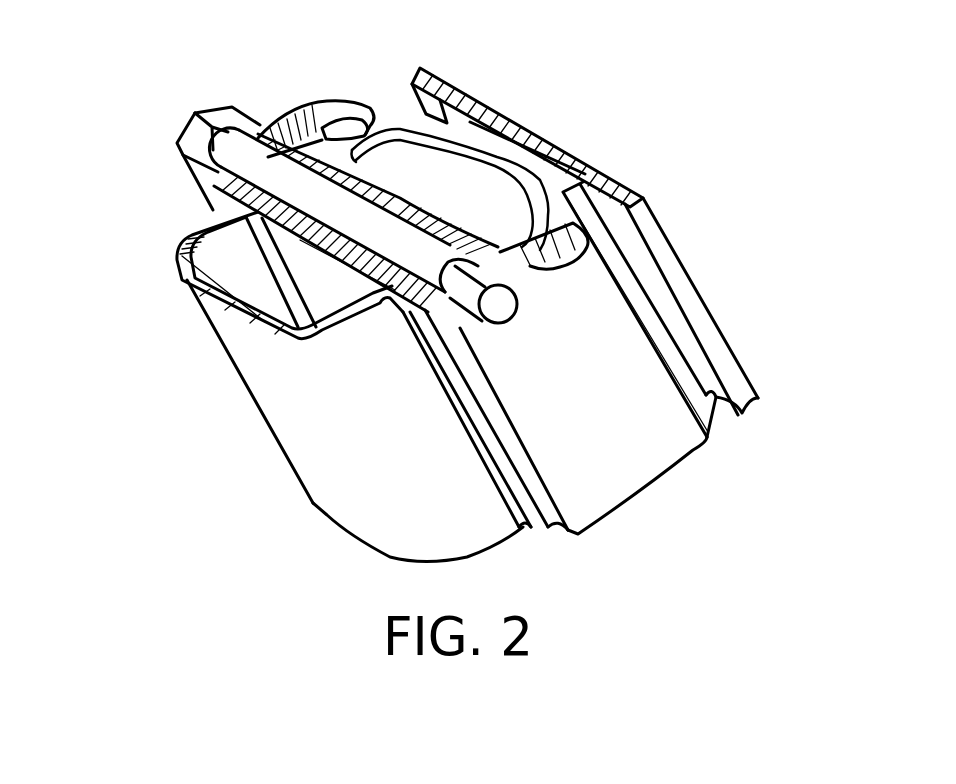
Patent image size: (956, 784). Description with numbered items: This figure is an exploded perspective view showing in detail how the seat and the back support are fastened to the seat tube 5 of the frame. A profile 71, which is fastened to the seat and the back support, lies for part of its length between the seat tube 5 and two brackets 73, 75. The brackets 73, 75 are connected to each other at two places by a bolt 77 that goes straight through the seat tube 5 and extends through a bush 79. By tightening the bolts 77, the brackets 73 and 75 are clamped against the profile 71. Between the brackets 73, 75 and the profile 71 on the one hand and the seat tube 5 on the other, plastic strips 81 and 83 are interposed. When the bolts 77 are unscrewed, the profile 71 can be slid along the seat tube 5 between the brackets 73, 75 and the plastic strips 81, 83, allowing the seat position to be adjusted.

The seat tube 5 is at (317, 417).
The profile 71 is at (650, 230).
The bracket 73 is at (627, 447).
The bracket 75 is at (303, 130).
The bolt 77 is at (298, 190).
The bush 79 is at (325, 240).
The plastic strip 81 is at (510, 240).
The plastic strip 83 is at (352, 150).